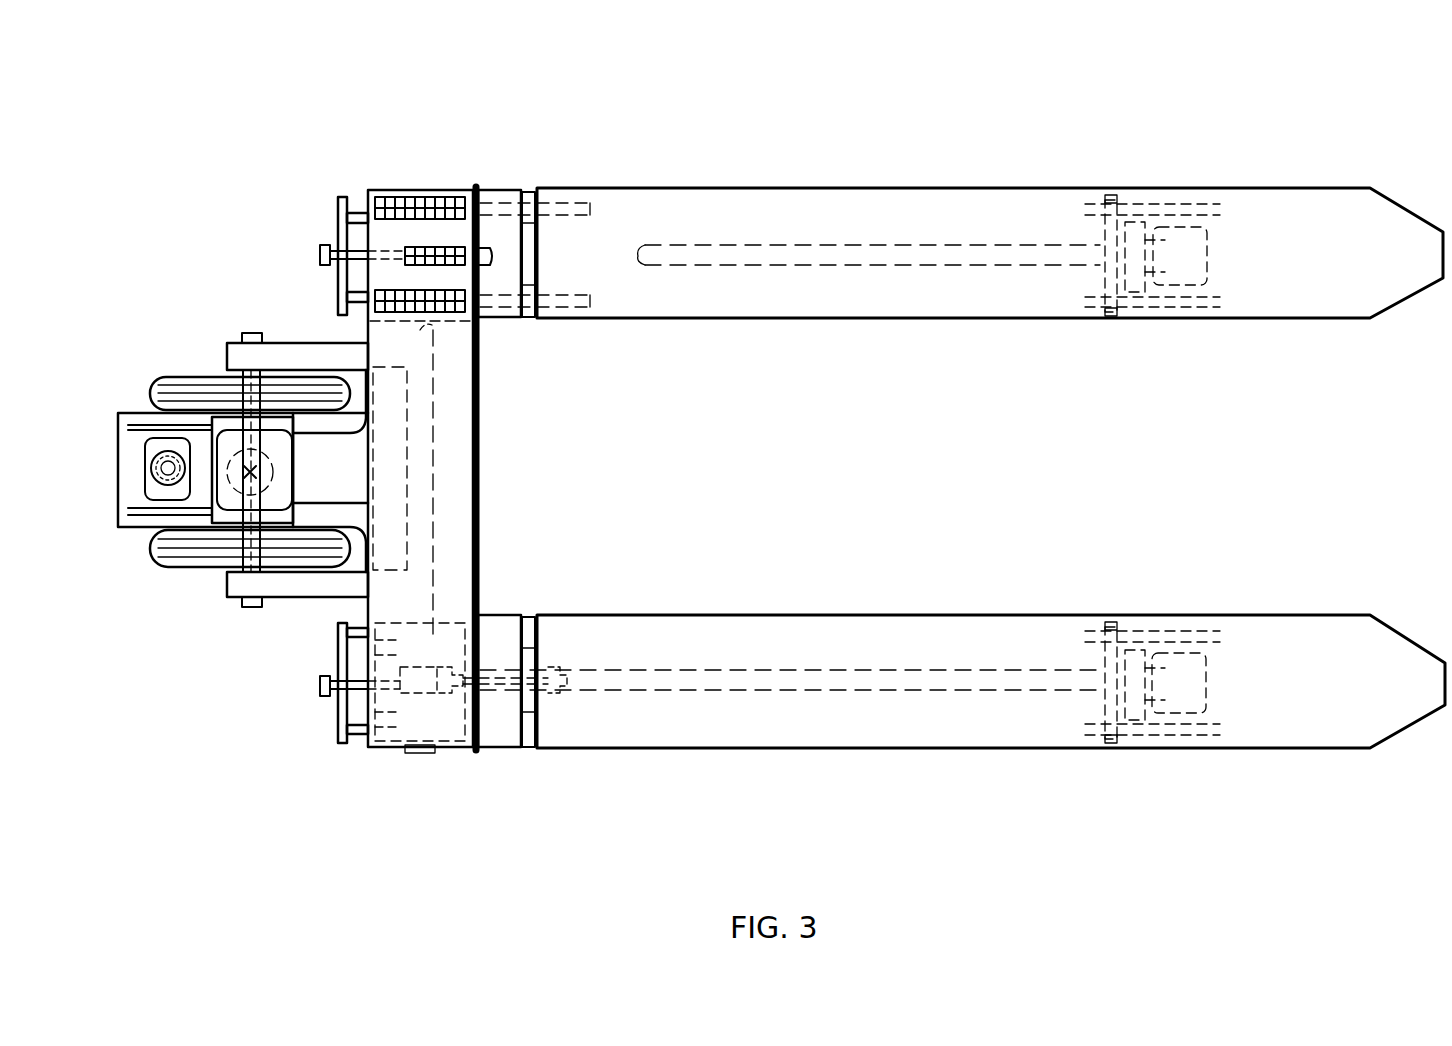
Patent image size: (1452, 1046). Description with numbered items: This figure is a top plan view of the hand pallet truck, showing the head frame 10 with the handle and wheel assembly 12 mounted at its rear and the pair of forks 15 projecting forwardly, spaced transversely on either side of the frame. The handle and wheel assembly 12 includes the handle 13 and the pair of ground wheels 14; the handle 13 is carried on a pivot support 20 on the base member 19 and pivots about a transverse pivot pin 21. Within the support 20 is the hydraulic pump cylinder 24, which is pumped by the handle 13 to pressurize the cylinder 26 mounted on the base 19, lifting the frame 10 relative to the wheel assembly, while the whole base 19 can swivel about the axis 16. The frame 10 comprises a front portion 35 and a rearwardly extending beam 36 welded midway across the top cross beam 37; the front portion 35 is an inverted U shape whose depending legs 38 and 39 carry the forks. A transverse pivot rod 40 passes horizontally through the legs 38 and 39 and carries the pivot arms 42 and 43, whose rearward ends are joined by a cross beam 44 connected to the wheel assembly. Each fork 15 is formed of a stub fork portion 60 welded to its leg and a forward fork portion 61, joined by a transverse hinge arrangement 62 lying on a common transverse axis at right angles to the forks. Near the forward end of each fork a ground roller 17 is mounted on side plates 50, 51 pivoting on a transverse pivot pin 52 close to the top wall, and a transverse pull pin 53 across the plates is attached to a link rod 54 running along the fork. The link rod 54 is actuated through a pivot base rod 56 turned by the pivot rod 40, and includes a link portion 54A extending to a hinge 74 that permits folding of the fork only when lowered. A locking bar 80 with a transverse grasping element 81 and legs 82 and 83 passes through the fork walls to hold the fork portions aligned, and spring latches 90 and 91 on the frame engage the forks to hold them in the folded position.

The head frame 10 is at (483, 520).
The handle and wheel assembly 12 is at (192, 613).
The handle 13 is at (148, 465).
The ground wheels 14 is at (168, 382).
The forks 15 is at (990, 186).
The axis 16 is at (258, 468).
The ground rollers 17 is at (1215, 262).
The base member 19 is at (130, 490).
The pivot support 20 is at (136, 413).
The transverse pivot pin 21 is at (170, 520).
The hydraulic pump cylinder 24 is at (210, 540).
The cylinder 26 is at (300, 520).
The front portion 35 is at (485, 447).
The rearwardly extending beam 36 is at (360, 495).
The top cross beam 37 is at (484, 482).
The depending leg 38 is at (382, 750).
The depending leg 39 is at (402, 190).
The transverse pivot rod 40 is at (440, 422).
The pivot arm 42 is at (290, 590).
The pivot arm 43 is at (300, 343).
The cross beam 44 is at (240, 333).
The side plate 50 is at (1195, 650).
The side plate 51 is at (1195, 715).
The transverse pivot pin 52 is at (1100, 657).
The transverse pull pin 53 is at (1135, 660).
The link rod 54 is at (818, 245).
The link portion 54A is at (500, 700).
The pivot base rod 56 is at (455, 700).
The stub fork portion 60 is at (497, 325).
The forward fork portion 61 is at (870, 320).
The transverse hinge arrangement 62 is at (533, 179).
The hinge 74 is at (562, 692).
The locking bar 80 is at (336, 205).
The transverse grasping element 81 is at (345, 240).
The leg 82 is at (583, 203).
The leg 83 is at (588, 308).
The spring latch 90 is at (318, 255).
The spring latch 91 is at (322, 680).